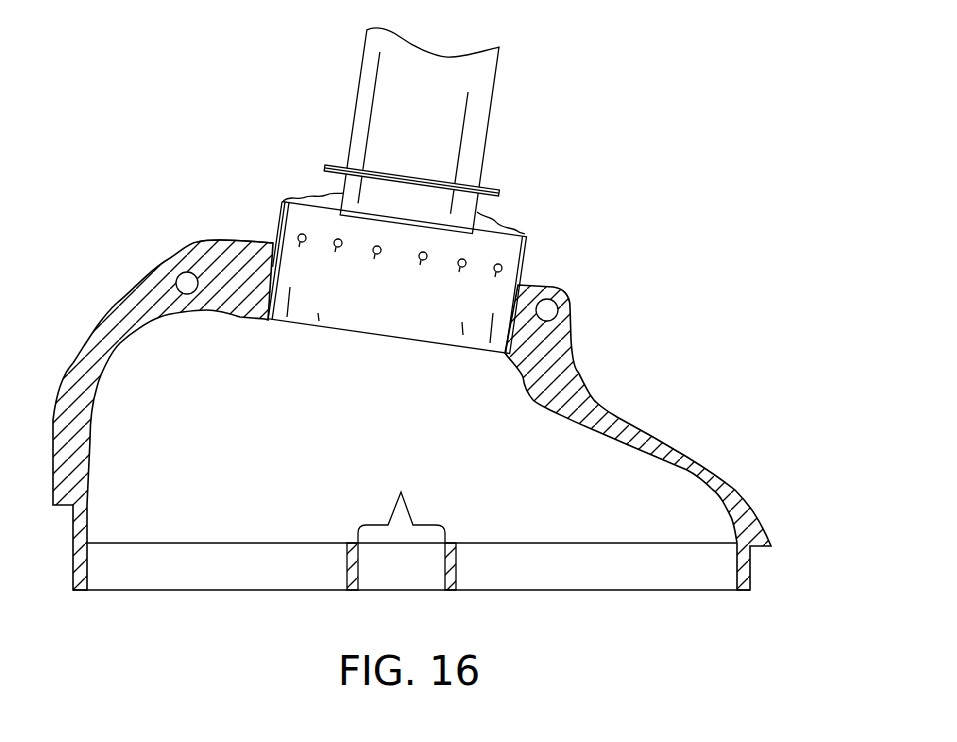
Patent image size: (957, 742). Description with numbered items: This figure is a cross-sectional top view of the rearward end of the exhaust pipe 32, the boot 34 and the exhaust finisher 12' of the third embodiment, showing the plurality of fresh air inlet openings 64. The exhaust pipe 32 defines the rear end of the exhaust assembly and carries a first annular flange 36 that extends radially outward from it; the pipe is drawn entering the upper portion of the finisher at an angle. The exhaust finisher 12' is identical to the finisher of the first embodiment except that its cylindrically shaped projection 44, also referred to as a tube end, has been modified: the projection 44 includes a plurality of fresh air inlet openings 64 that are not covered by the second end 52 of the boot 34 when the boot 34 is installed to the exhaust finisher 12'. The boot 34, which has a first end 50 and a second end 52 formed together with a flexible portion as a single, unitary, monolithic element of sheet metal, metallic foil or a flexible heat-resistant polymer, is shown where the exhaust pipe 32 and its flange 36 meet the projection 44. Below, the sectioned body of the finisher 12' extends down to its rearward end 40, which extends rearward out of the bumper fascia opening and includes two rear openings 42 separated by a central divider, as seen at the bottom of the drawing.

The exhaust finisher 12' is at (412, 415).
The exhaust pipe 32 is at (493, 83).
The boot 34 is at (515, 218).
The first annular flange 36 is at (488, 188).
The rearward end 40 is at (447, 570).
The rear openings 42 is at (598, 608).
The cylindrically shaped projection 44 is at (277, 233).
The first end 50 is at (330, 190).
The second end 52 is at (277, 215).
The fresh air inlet openings 64 is at (302, 243).